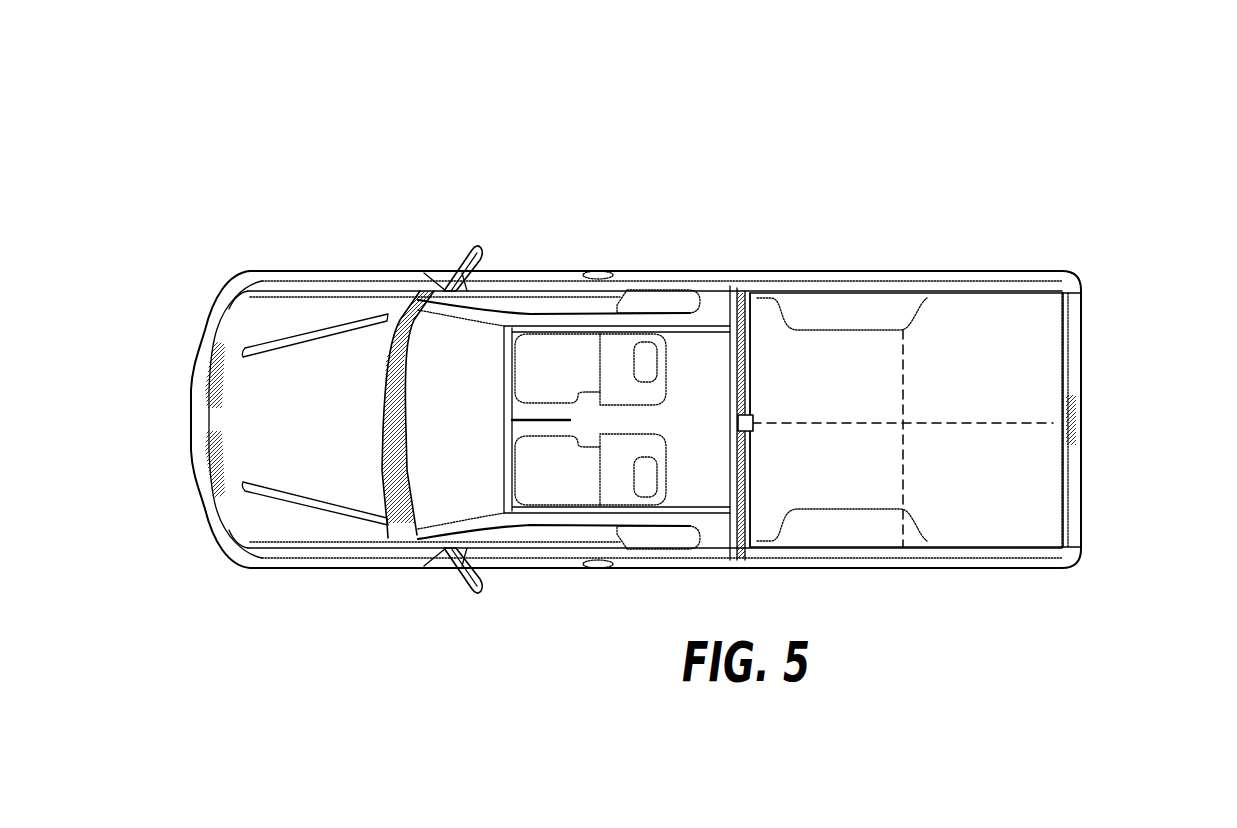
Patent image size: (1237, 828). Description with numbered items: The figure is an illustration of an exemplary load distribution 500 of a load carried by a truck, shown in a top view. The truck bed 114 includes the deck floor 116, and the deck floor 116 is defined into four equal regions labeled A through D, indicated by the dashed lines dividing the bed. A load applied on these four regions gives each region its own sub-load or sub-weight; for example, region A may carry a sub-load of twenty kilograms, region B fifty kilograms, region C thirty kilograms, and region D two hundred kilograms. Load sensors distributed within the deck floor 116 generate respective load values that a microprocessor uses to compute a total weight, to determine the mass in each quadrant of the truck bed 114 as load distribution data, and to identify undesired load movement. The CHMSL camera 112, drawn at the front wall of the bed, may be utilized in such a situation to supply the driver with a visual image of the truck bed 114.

The load distribution 500 is at (294, 154).
The CHMSL camera 112 is at (752, 415).
The truck bed 114 is at (1005, 318).
The deck floor 116 is at (1033, 473).